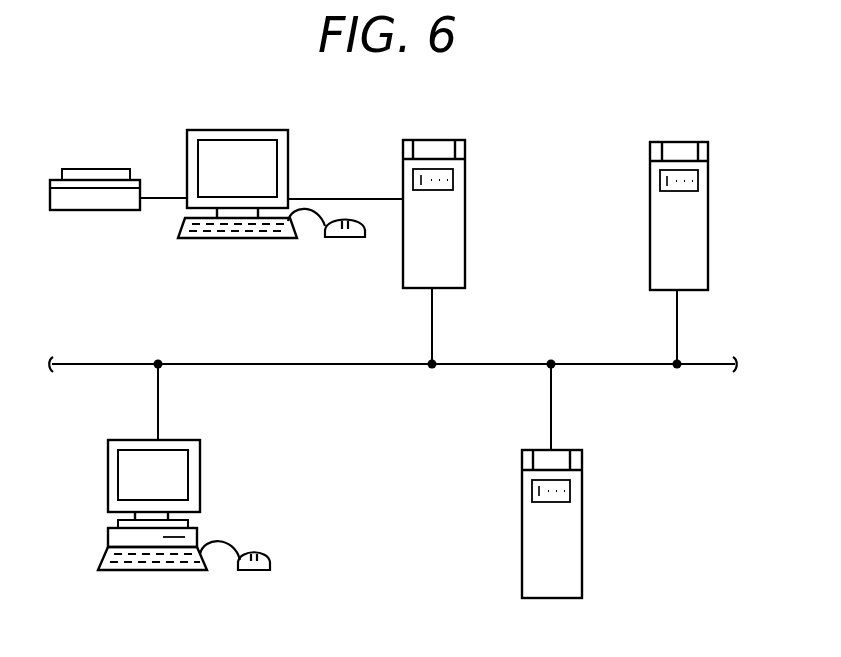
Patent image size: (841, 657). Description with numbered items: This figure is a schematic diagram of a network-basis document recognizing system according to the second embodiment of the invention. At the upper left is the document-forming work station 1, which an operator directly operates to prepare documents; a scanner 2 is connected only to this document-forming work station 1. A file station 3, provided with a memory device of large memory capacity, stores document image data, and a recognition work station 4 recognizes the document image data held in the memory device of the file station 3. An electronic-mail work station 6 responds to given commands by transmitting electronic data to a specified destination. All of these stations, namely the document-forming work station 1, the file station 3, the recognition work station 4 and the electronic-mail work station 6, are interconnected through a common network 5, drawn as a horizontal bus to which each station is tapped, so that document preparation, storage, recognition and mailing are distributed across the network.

The document-forming work station 1 is at (249, 130).
The scanner 2 is at (77, 211).
The file station 3 is at (650, 272).
The recognition work station 4 is at (200, 490).
The network 5 is at (254, 366).
The electronic-mail work station 6 is at (583, 570).